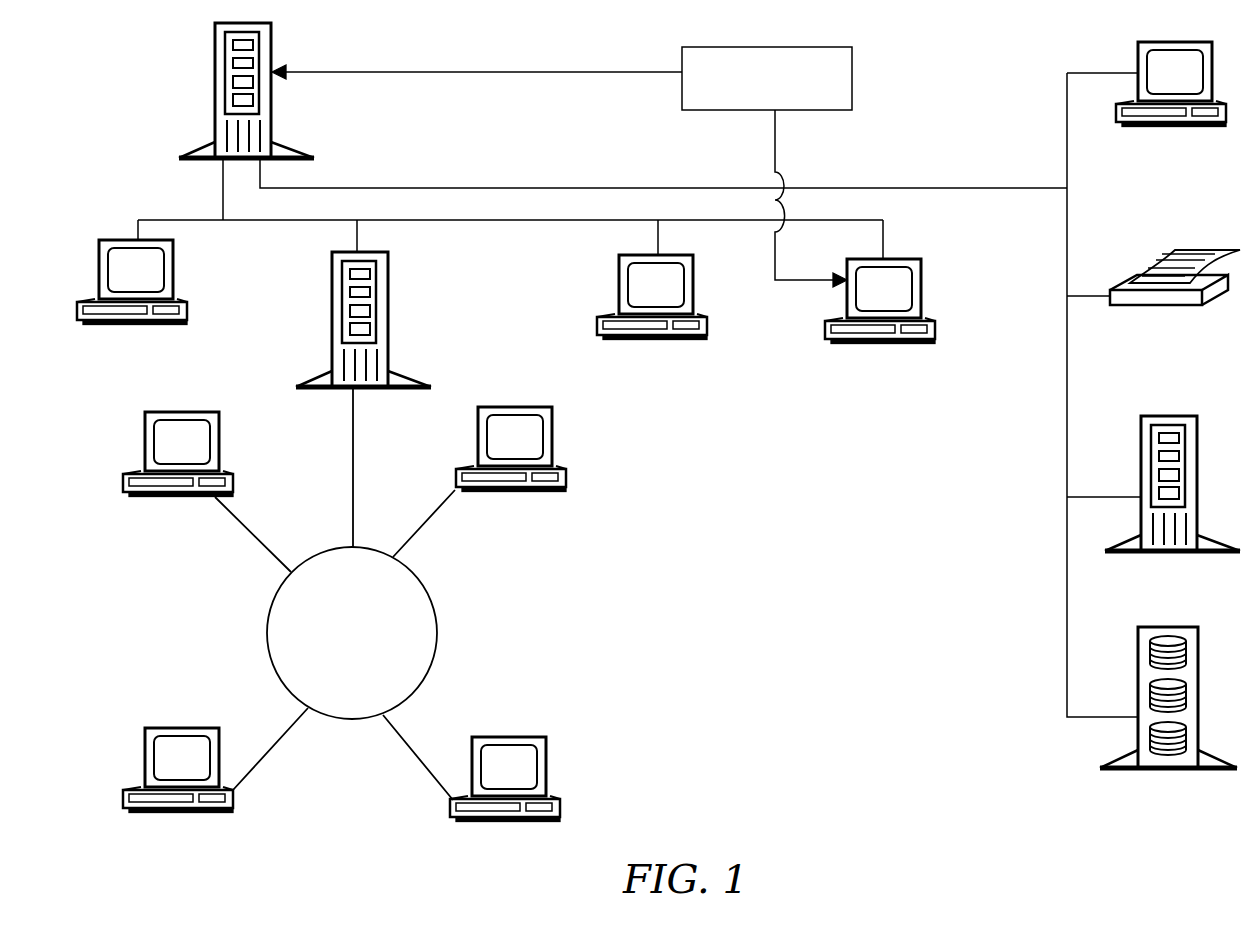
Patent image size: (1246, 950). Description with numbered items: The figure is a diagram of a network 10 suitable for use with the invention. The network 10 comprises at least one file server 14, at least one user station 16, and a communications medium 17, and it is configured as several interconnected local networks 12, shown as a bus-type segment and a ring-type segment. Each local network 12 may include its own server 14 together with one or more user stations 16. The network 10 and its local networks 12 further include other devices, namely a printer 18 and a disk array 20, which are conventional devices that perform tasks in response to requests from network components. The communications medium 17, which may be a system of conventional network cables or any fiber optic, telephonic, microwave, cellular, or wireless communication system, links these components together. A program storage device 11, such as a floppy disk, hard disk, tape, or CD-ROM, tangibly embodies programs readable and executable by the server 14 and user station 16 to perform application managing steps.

The network 10 is at (125, 100).
The program storage device 11 is at (852, 95).
The local network 12 is at (198, 220).
The file server 14 is at (273, 93).
The user station 16 is at (694, 298).
The communications medium 17 is at (938, 188).
The printer 18 is at (1155, 307).
The disk array 20 is at (1167, 770).